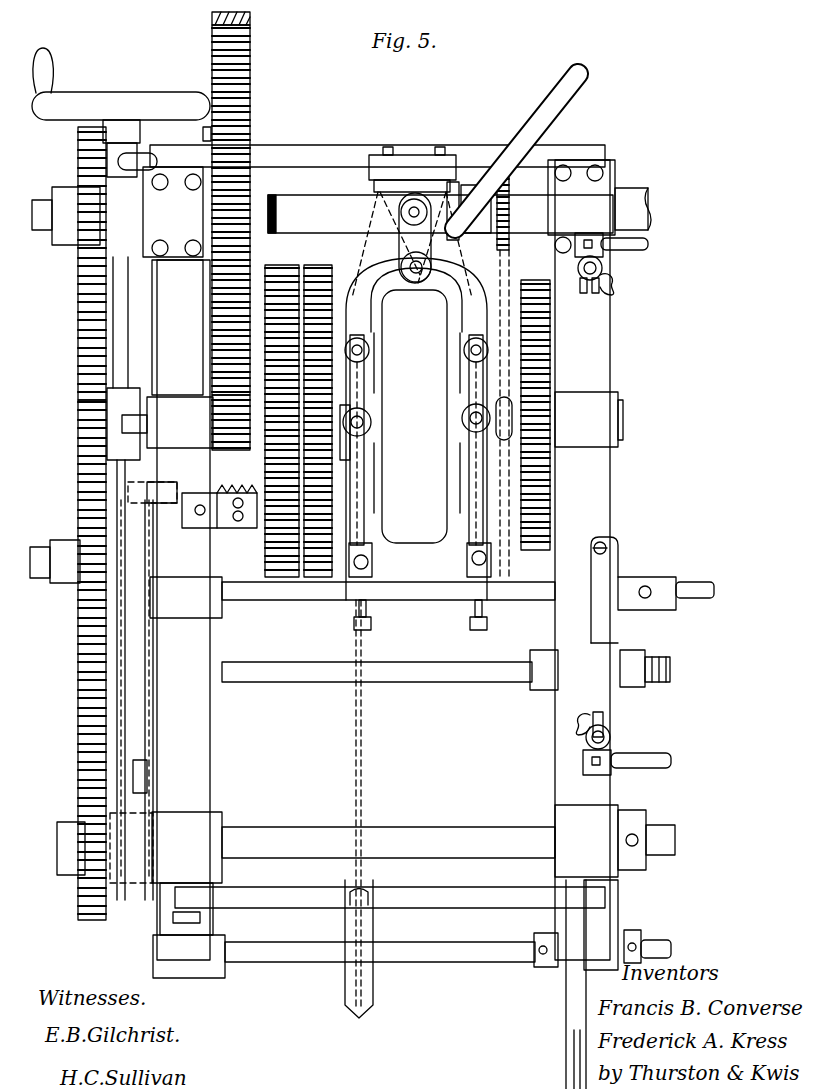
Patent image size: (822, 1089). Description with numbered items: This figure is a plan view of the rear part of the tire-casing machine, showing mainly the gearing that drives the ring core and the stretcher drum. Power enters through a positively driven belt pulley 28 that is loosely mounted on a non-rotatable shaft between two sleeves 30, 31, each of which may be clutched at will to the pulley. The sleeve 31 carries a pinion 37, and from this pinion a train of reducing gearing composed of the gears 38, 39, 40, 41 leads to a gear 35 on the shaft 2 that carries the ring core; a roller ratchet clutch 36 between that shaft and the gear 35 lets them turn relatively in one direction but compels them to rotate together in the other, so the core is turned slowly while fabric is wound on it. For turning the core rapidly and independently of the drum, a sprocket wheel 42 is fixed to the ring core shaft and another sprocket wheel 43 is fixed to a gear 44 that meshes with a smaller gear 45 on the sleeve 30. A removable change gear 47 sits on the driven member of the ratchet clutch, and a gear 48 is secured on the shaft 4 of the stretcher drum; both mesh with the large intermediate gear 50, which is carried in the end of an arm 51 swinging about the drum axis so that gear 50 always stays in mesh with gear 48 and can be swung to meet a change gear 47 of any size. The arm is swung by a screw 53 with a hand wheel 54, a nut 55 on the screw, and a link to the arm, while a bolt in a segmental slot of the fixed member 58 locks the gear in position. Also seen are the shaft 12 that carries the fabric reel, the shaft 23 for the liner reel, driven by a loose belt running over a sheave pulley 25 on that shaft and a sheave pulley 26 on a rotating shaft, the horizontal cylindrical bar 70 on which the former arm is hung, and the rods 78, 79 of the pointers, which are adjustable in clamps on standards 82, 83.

The shaft 2 is at (629, 195).
The shaft of the stretcher drum 4 is at (388, 842).
The shaft 12 is at (506, 668).
The shaft 23 is at (478, 962).
The sheave pulley 25 is at (374, 996).
The sheave pulley 26 is at (362, 470).
The belt pulley 28 is at (414, 416).
The sleeve 30 is at (457, 432).
The sleeve 31 is at (377, 412).
The gear 35 is at (240, 96).
The roller ratchet clutch 36 is at (204, 133).
The pinion 37 is at (371, 430).
The gear 38 is at (372, 560).
The gear 39 is at (192, 500).
The gear 40 is at (266, 564).
The gear 41 is at (218, 452).
The sprocket wheel 42 is at (506, 244).
The sprocket wheel 43 is at (506, 445).
The gear 44 is at (493, 584).
The gear 45 is at (550, 420).
The change gear 47 is at (78, 298).
The gear 48 is at (80, 800).
The intermediate gear 50 is at (80, 457).
The arm 51 is at (116, 706).
The screw 53 is at (122, 350).
The hand wheel 54 is at (150, 100).
The nut 55 is at (148, 773).
The fixed member 58 is at (186, 597).
The horizontal cylindrical bar 70 is at (698, 580).
The rod 78 is at (648, 244).
The rod 79 is at (662, 768).
The standard 82 is at (598, 270).
The standard 83 is at (610, 738).